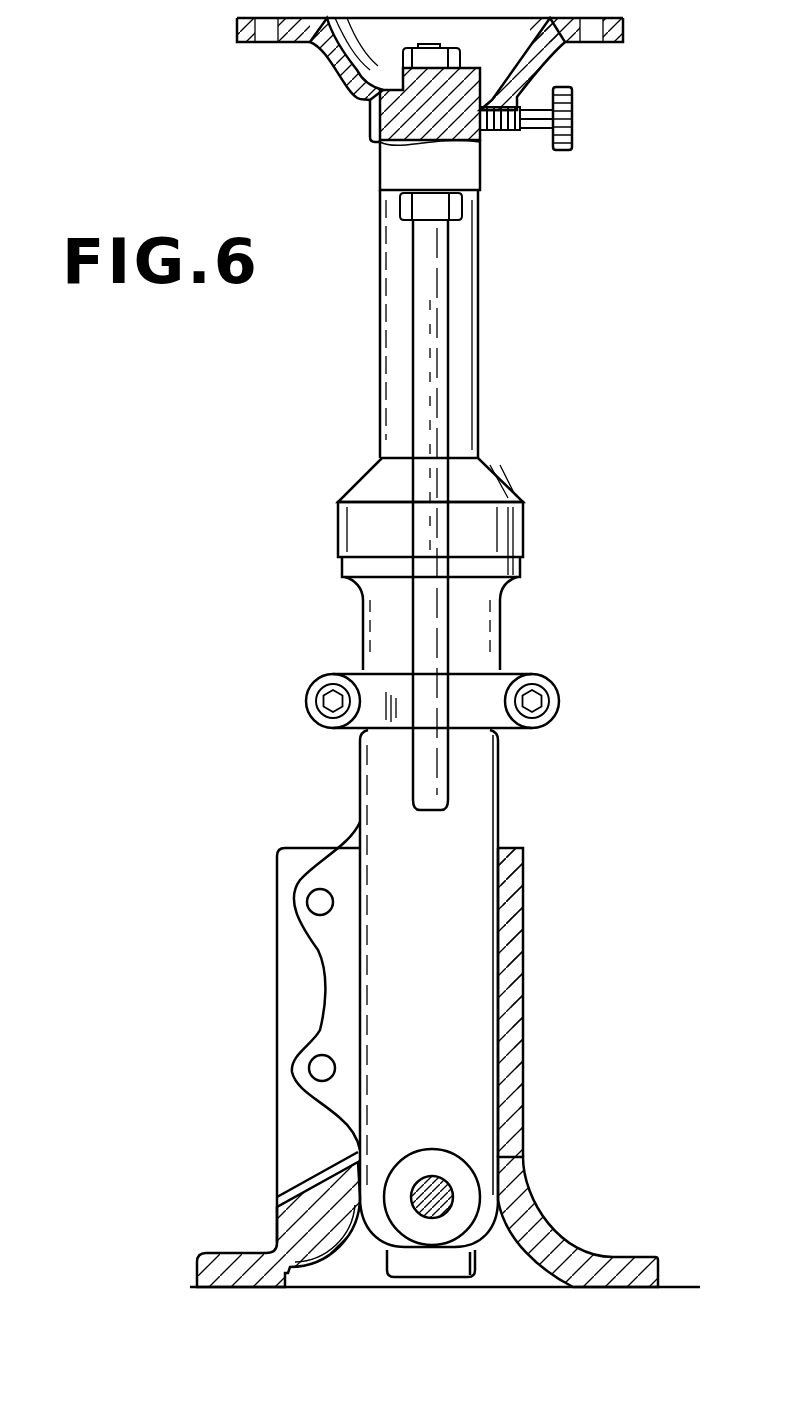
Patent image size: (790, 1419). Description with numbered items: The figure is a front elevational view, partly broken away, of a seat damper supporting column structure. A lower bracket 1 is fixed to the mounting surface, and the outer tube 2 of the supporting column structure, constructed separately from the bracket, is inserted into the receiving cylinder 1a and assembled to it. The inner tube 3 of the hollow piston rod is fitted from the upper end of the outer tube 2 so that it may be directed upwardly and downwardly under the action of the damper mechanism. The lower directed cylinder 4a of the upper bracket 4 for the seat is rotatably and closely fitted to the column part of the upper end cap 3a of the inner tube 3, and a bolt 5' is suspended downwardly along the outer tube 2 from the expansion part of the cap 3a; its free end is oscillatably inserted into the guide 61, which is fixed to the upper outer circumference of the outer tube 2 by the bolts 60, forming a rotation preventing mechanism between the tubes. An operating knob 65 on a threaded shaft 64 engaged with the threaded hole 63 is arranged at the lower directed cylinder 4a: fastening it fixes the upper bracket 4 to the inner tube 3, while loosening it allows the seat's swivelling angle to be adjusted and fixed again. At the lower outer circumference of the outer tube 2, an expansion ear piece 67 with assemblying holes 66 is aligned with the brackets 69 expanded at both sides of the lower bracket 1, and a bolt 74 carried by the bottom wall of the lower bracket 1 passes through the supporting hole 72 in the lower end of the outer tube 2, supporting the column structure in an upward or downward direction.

The lower bracket 1 is at (553, 1218).
The receiving cylinder 1a is at (512, 1048).
The outer tube 2 is at (385, 790).
The inner tube 3 is at (395, 352).
The upper end cap 3a is at (372, 147).
The upper bracket 4 is at (322, 44).
The lower directed cylinder 4a is at (370, 113).
The bolt 5' is at (550, 515).
The bolts 60 is at (318, 693).
The guide 61 is at (482, 693).
The threaded hole 63 is at (500, 143).
The threaded shaft 64 is at (530, 132).
The operating knob 65 is at (572, 113).
The assemblying holes 66 is at (315, 903).
The expansion ear piece 67 is at (341, 965).
The brackets 69 is at (303, 858).
The supporting hole 72 is at (447, 1182).
The bolt 74 is at (417, 1213).